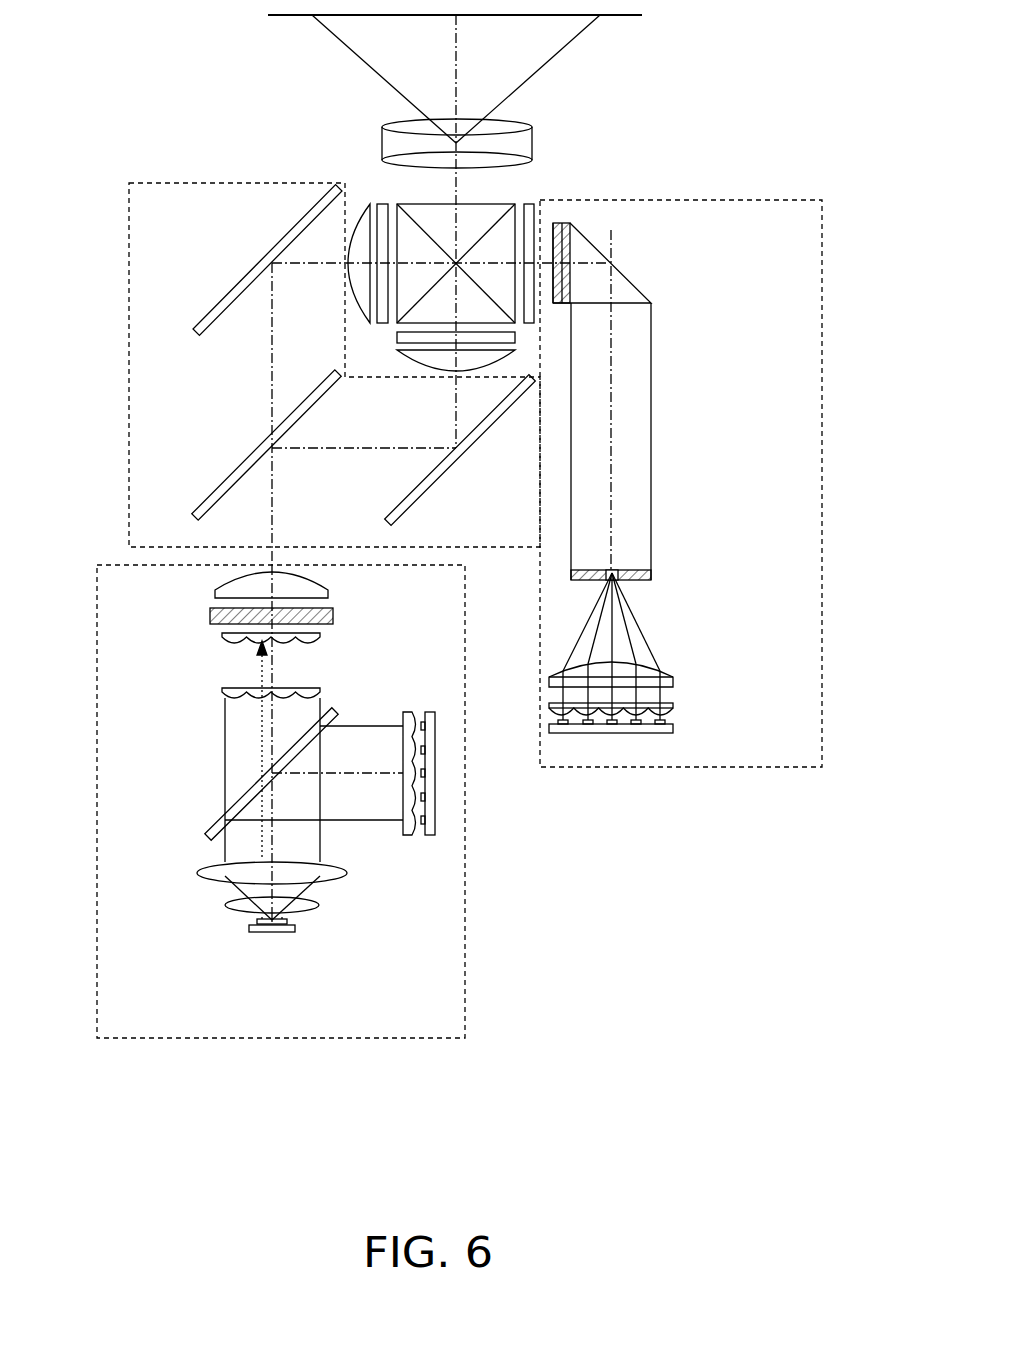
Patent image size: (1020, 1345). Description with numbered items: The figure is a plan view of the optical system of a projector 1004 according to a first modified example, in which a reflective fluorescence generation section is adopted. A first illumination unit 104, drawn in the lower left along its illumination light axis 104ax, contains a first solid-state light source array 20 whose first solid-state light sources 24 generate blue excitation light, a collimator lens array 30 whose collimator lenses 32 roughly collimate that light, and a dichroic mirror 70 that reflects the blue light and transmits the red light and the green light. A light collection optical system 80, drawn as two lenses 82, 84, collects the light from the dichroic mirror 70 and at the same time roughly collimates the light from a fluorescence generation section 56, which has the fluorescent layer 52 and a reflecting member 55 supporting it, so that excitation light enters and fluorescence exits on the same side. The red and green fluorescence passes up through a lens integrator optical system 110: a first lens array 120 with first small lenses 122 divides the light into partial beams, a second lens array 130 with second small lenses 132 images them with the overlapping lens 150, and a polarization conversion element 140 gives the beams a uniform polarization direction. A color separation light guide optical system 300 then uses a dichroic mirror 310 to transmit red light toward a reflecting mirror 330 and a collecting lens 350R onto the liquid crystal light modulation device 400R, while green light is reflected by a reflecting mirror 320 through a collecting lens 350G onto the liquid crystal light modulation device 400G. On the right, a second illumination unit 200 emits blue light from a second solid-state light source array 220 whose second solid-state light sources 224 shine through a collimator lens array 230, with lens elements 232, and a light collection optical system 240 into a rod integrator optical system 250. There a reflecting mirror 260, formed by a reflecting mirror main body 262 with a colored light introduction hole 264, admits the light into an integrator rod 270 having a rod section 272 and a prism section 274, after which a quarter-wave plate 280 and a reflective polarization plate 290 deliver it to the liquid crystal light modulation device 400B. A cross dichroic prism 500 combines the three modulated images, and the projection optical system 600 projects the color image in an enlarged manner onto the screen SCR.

The projector 1004 is at (826, 31).
The screen SCR is at (630, 17).
The projection optical system 600 is at (382, 142).
The cross dichroic prism 500 is at (528, 203).
The liquid crystal light modulation device for red light 400R is at (380, 203).
The liquid crystal light modulation device for green light 400G is at (397, 337).
The liquid crystal light modulation device for blue light 400B is at (535, 203).
The collecting lens 350R is at (348, 204).
The collecting lens 350G is at (390, 369).
The color separation light guide optical system 300 is at (128, 400).
The reflecting mirror 330 is at (214, 306).
The dichroic mirror 310 is at (228, 476).
The reflecting mirror 320 is at (428, 487).
The second illumination unit 200 is at (716, 770).
The reflective polarization plate 290 is at (561, 224).
The λ/4 plate 280 is at (568, 226).
The rod integrator optical system 250 is at (682, 409).
The integrator rod 270 is at (662, 401).
The prism section 274 is at (637, 290).
The rod section 272 is at (640, 441).
The reflecting mirror 260 is at (682, 585).
The reflecting mirror main body 262 is at (652, 576).
The colored light introduction hole 264 is at (630, 589).
The light collection optical system 240 is at (673, 680).
The collimator lens array 230 is at (652, 690).
The small lenses 232 is at (670, 713).
The second solid-state light sources 224 is at (673, 722).
The second solid-state light source array 220 is at (684, 730).
The first illumination unit 104 is at (378, 1040).
The illumination optical axis 104ax is at (270, 560).
The lens integrator optical system 110 is at (309, 638).
The overlapping lens 150 is at (330, 592).
The polarization conversion element 140 is at (333, 615).
The second lens array 130 is at (286, 635).
The second small lenses 132 is at (222, 640).
The first lens array 120 is at (286, 687).
The first small lenses 122 is at (222, 693).
The dichroic mirror 70 is at (205, 834).
The light collection optical system 80 is at (223, 896).
The first lens 82 is at (215, 872).
The second lens 84 is at (225, 905).
The fluorescence generation section 56 is at (326, 943).
The fluorescent layer 52 is at (290, 921).
The reflecting member 55 is at (295, 932).
The collimator lens array 30 is at (396, 814).
The collimator lenses 32 is at (413, 838).
The first solid-state light source array 20 is at (437, 826).
The first solid-state light sources 24 is at (423, 840).